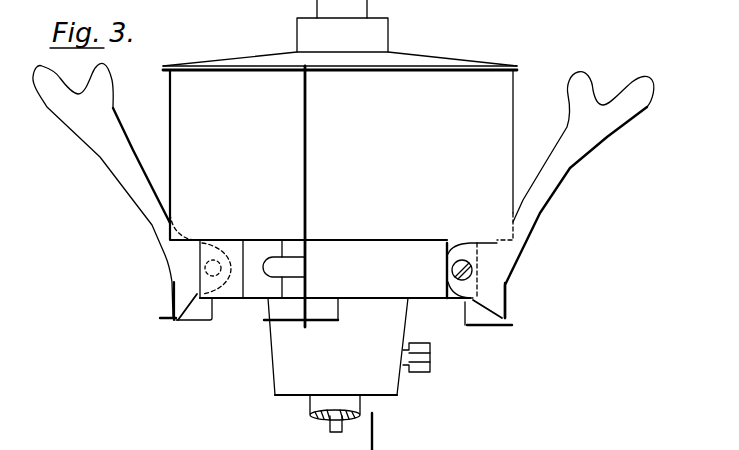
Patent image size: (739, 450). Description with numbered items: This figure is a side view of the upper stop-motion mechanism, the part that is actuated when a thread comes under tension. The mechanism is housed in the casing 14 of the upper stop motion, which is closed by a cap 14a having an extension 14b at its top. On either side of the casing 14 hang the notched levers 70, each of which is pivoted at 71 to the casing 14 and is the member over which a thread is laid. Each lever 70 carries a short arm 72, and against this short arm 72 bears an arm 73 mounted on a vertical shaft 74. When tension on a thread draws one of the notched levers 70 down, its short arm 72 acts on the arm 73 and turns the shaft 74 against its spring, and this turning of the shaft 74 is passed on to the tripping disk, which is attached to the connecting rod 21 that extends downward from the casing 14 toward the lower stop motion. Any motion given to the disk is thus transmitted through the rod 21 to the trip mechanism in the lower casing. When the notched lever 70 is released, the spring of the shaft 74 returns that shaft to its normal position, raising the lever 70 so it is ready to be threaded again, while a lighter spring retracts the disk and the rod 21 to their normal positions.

The casing of the upper stop motion 14 is at (340, 153).
The cap 14a is at (414, 57).
The extension 14b is at (326, 4).
The connecting rod 21 is at (332, 427).
The lever 70 is at (125, 173).
The pivot 71 is at (203, 267).
The short arm 72 is at (177, 323).
The arm 73 is at (160, 319).
The shaft 74 is at (214, 306).